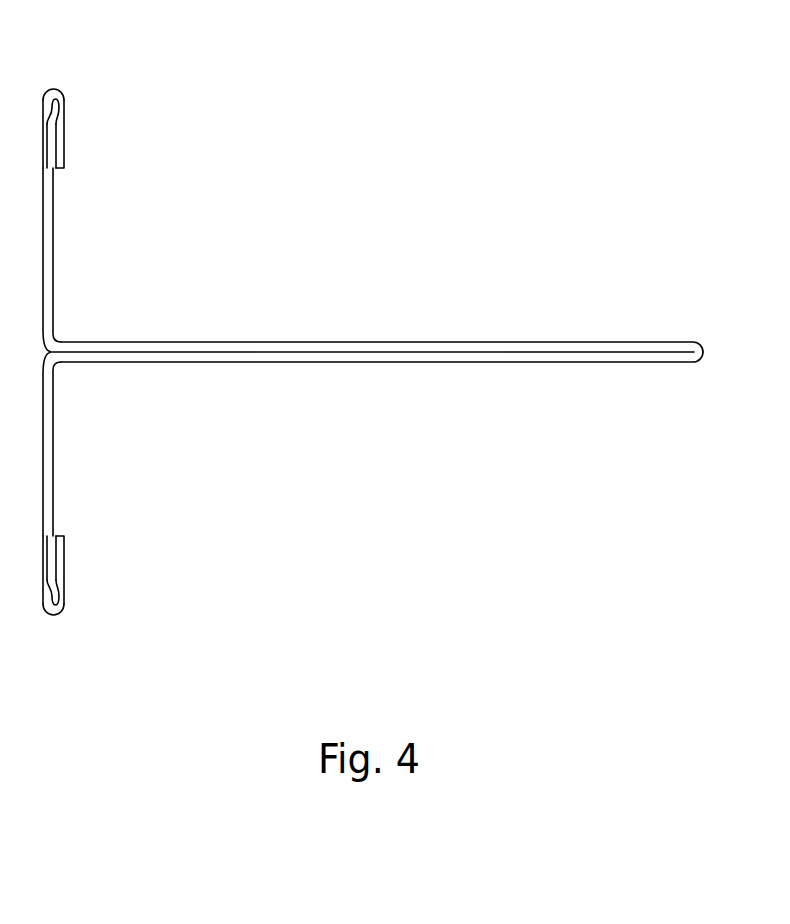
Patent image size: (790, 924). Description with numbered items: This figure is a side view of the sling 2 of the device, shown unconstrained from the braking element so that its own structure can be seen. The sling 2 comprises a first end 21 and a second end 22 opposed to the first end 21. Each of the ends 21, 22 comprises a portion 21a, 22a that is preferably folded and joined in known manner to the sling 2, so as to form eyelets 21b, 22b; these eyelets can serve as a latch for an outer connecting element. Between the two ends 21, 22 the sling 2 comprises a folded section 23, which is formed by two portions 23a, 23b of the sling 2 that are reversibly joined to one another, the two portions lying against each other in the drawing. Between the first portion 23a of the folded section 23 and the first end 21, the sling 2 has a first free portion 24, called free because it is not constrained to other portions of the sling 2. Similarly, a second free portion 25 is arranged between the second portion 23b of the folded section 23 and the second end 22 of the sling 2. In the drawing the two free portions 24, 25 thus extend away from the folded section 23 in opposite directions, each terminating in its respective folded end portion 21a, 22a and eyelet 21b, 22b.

The sling 2 is at (373, 355).
The first end 21 is at (114, 95).
The portion of first end 21a is at (64, 157).
The eyelet of first end 21b is at (53, 100).
The second end 22 is at (112, 596).
The portion of second end 22a is at (64, 548).
The eyelet of second end 22b is at (53, 606).
The folded section 23 is at (376, 343).
The first portion of folded section 23a is at (338, 342).
The second portion of folded section 23b is at (338, 362).
The first free portion 24 is at (53, 252).
The second free portion 25 is at (53, 430).